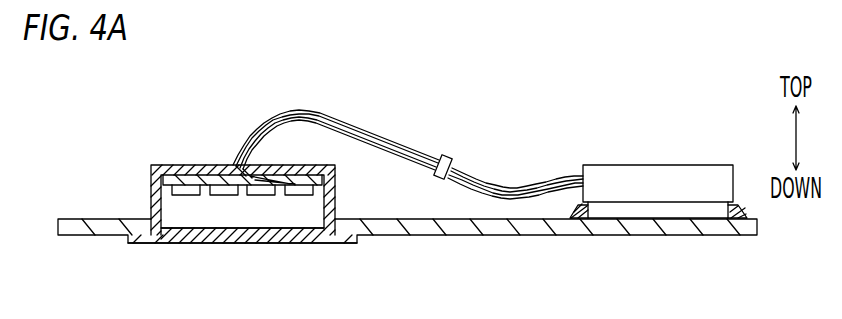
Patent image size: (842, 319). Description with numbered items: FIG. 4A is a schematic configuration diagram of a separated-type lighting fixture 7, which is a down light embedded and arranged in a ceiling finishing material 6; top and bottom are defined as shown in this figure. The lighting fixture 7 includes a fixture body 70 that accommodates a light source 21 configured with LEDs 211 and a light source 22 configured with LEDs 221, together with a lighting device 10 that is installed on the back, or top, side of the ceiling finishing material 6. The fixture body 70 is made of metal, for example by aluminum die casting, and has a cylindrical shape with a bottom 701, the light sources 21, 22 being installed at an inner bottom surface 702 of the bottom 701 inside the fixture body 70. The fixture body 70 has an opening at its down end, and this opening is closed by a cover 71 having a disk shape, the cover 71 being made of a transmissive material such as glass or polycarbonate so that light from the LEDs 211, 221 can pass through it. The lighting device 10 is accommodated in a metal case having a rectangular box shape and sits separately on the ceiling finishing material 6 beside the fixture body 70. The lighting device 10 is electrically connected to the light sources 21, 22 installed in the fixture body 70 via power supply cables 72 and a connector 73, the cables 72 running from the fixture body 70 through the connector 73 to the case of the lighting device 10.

The ceiling finishing material 6 is at (540, 236).
The lighting fixture 7 is at (220, 214).
The fixture body 70 is at (139, 187).
The cover 71 is at (208, 240).
The light source 21 is at (229, 147).
The LEDs 211 is at (208, 172).
The light source 22 is at (257, 237).
The LEDs 221 is at (298, 197).
The power supply cables 72 is at (408, 135).
The bottom 701 is at (298, 172).
The inner bottom surface 702 is at (260, 133).
The connector 73 is at (448, 158).
The lighting device 10 is at (670, 154).